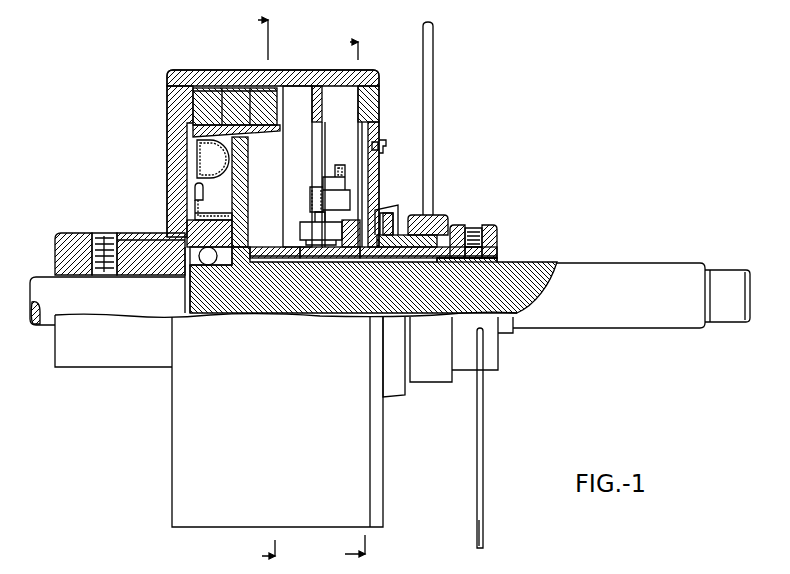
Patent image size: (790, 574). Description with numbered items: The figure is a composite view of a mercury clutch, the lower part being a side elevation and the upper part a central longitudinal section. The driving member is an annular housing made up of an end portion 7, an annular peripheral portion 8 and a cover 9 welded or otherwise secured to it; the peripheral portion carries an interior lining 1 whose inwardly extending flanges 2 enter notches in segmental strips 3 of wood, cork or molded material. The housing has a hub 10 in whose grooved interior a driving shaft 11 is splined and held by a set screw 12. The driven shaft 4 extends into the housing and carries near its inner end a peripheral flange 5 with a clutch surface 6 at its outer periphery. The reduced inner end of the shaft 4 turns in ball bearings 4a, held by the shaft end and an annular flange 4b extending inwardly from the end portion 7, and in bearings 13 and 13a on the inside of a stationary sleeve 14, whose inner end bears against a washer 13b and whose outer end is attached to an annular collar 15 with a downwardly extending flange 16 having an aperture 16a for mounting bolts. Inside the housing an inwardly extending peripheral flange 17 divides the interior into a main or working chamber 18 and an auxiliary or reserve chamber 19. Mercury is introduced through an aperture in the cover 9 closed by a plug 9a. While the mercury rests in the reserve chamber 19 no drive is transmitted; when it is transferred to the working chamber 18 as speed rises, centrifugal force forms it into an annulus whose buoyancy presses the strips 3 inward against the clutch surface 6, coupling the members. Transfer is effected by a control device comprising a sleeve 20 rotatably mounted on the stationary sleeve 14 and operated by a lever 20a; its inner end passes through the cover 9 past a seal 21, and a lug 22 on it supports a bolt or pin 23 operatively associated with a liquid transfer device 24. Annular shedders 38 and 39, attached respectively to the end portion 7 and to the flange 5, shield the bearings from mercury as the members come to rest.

The interior lining 1 is at (258, 85).
The inwardly extending flanges 2 is at (345, 299).
The segmental strips 3 is at (218, 95).
The shaft 4 is at (547, 265).
The ball bearings 4a is at (196, 246).
The annular flange 4b is at (213, 206).
The peripheral flange 5 is at (249, 176).
The clutch surface 6 is at (265, 127).
The end portion 7 is at (167, 113).
The annular peripheral portion 8 is at (283, 70).
The cover 9 is at (380, 126).
The plug 9a is at (386, 148).
The hub 10 is at (70, 233).
The shaft 11 is at (43, 277).
The set screw 12 is at (107, 246).
The bearing 13 is at (499, 257).
The bearing 13a is at (312, 230).
The washer 13b is at (253, 242).
The stationary sleeve 14 is at (152, 245).
The annular collar 15 is at (497, 236).
The downwardly extending flange 16 is at (483, 455).
The aperture 16a is at (483, 525).
The inwardly extending peripheral flange 17 is at (316, 110).
The main or working chamber 18 is at (300, 92).
The auxiliary or reserve chamber 19 is at (368, 102).
The sleeve 20 is at (441, 218).
The lever 20a is at (433, 122).
The seal 21 is at (395, 206).
The lug 22 is at (352, 228).
The bolt or pin 23 is at (322, 228).
The liquid transfer device 24 is at (330, 180).
The annular shedder 38 is at (222, 160).
The annular shedder 39 is at (194, 204).